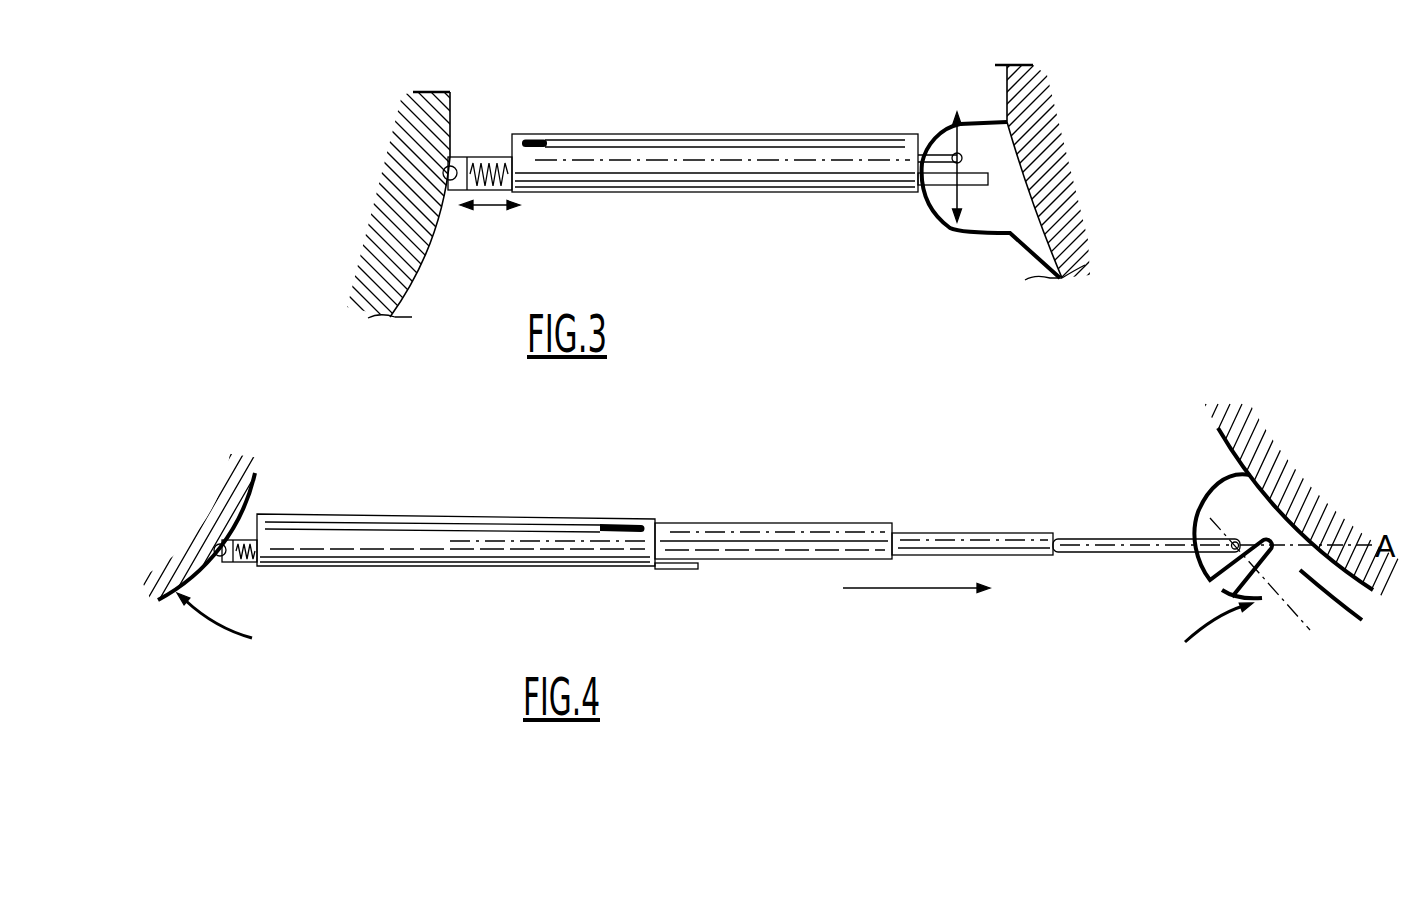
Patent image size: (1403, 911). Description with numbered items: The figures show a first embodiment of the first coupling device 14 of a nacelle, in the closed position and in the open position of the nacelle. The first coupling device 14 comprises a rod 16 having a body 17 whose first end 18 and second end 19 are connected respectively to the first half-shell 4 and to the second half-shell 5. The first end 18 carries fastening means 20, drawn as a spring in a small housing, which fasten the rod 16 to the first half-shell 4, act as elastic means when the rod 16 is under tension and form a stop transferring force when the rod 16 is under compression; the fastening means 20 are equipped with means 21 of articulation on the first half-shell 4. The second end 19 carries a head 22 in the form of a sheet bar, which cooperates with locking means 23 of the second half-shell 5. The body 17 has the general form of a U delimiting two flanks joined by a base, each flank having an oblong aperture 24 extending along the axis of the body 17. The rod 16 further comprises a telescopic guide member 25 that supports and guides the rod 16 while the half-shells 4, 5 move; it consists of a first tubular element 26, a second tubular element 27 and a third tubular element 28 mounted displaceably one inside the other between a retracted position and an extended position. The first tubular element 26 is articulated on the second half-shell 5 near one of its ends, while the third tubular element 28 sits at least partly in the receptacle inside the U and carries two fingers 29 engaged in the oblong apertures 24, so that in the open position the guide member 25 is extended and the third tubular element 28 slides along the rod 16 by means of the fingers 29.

In FIG. 3, the first half-shell 4 is at (430, 240).
In FIG. 4, the first half-shell 4 is at (243, 493).
In FIG. 3, the second half-shell 5 is at (1047, 250).
In FIG. 4, the second half-shell 5 is at (1285, 515).
In FIG. 3, the first coupling device 14 is at (689, 231).
In FIG. 4, the first coupling device 14 is at (489, 587).
In FIG. 3, the rod 16 is at (715, 206).
In FIG. 4, the rod 16 is at (455, 581).
In FIG. 3, the body 17 is at (790, 175).
In FIG. 4, the body 17 is at (552, 547).
In FIG. 3, the first end 18 is at (489, 110).
In FIG. 4, the first end 18 is at (282, 481).
In FIG. 3, the second end 19 is at (928, 110).
In FIG. 4, the second end 19 is at (773, 530).
In FIG. 3, the fastening means 20 is at (495, 160).
In FIG. 3, the means of articulation 21 is at (445, 172).
In FIG. 4, the means of articulation 21 is at (215, 546).
In FIG. 3, the head 22 is at (945, 178).
In FIG. 4, the head 22 is at (690, 566).
In FIG. 3, the locking means 23 is at (1000, 207).
In FIG. 4, the locking means 23 is at (1245, 498).
In FIG. 4, the oblong aperture 24 is at (456, 540).
In FIG. 4, the telescopic guide member 25 is at (948, 534).
In FIG. 4, the first tubular element 26 is at (1130, 553).
In FIG. 4, the second tubular element 27 is at (1007, 559).
In FIG. 4, the third tubular element 28 is at (810, 560).
In FIG. 4, the fingers 29 is at (620, 527).